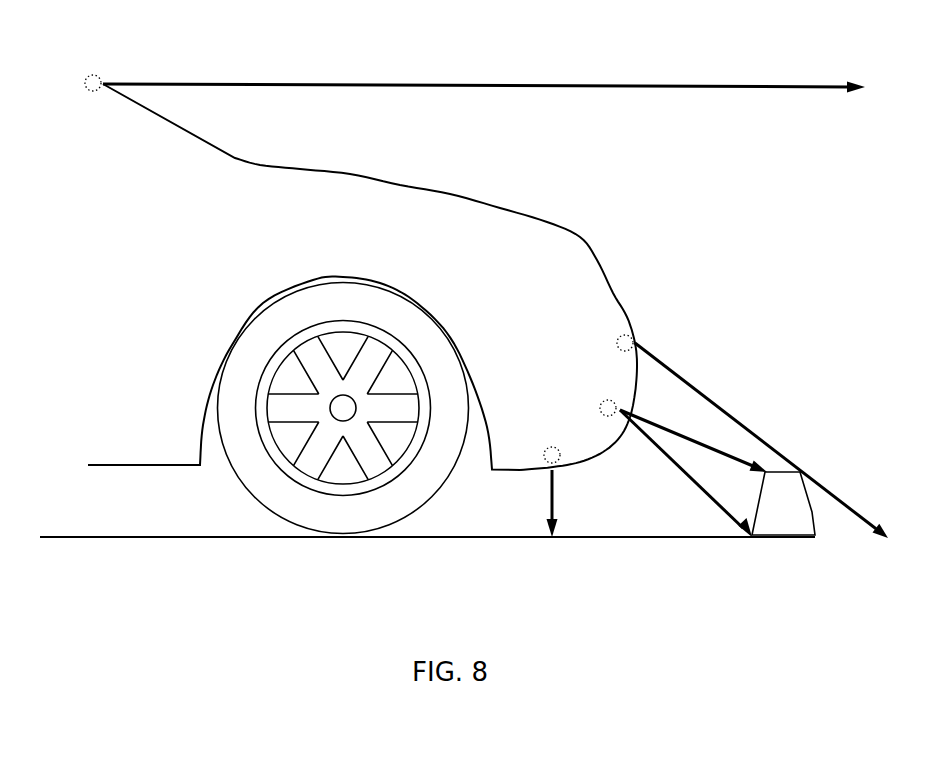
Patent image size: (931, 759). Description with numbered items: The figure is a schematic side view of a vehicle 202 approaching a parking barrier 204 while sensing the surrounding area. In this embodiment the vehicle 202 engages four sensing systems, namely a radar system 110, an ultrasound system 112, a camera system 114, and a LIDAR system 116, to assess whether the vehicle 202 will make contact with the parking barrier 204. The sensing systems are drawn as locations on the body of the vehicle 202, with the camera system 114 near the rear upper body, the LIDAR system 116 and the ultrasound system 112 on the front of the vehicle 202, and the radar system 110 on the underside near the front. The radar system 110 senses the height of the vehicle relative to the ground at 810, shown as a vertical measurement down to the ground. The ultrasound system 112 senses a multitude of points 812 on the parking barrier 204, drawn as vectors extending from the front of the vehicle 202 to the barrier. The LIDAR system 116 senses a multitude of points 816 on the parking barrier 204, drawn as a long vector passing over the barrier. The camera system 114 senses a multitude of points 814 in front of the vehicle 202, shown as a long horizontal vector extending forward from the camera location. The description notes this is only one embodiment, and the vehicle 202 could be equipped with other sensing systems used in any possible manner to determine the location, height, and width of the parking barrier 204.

The points in front of the vehicle 814 is at (258, 84).
The camera system 114 is at (84, 89).
The vehicle 202 is at (547, 222).
The LIDAR system 116 is at (628, 333).
The ultrasound system 112 is at (619, 409).
The radar system 110 is at (560, 456).
The points on the parking barrier 816 is at (758, 438).
The points on the parking barrier 812 is at (705, 447).
The height of the vehicle relative to the ground 810 is at (552, 491).
The parking barrier 204 is at (785, 537).